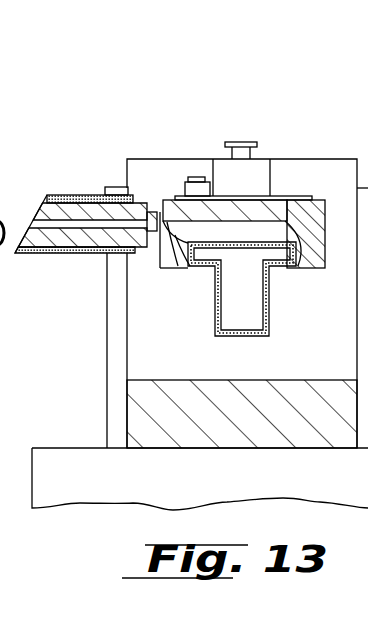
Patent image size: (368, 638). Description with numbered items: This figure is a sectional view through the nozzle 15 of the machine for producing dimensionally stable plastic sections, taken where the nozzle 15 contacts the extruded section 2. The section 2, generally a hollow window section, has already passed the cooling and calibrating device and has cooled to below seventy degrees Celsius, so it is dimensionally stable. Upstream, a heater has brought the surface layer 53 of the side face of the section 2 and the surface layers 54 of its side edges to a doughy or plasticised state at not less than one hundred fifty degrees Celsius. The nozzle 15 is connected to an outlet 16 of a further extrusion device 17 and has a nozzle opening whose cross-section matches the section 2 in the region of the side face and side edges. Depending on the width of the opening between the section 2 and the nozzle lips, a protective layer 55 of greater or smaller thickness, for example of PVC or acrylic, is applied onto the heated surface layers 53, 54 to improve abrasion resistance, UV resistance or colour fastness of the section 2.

The section 2 is at (224, 352).
The further nozzle 15 is at (146, 185).
The outlet 16 is at (155, 243).
The further extrusion device 17 is at (80, 183).
The surface layer 53 is at (276, 236).
The surface layers 54 is at (282, 246).
The protective layer 55 is at (203, 238).